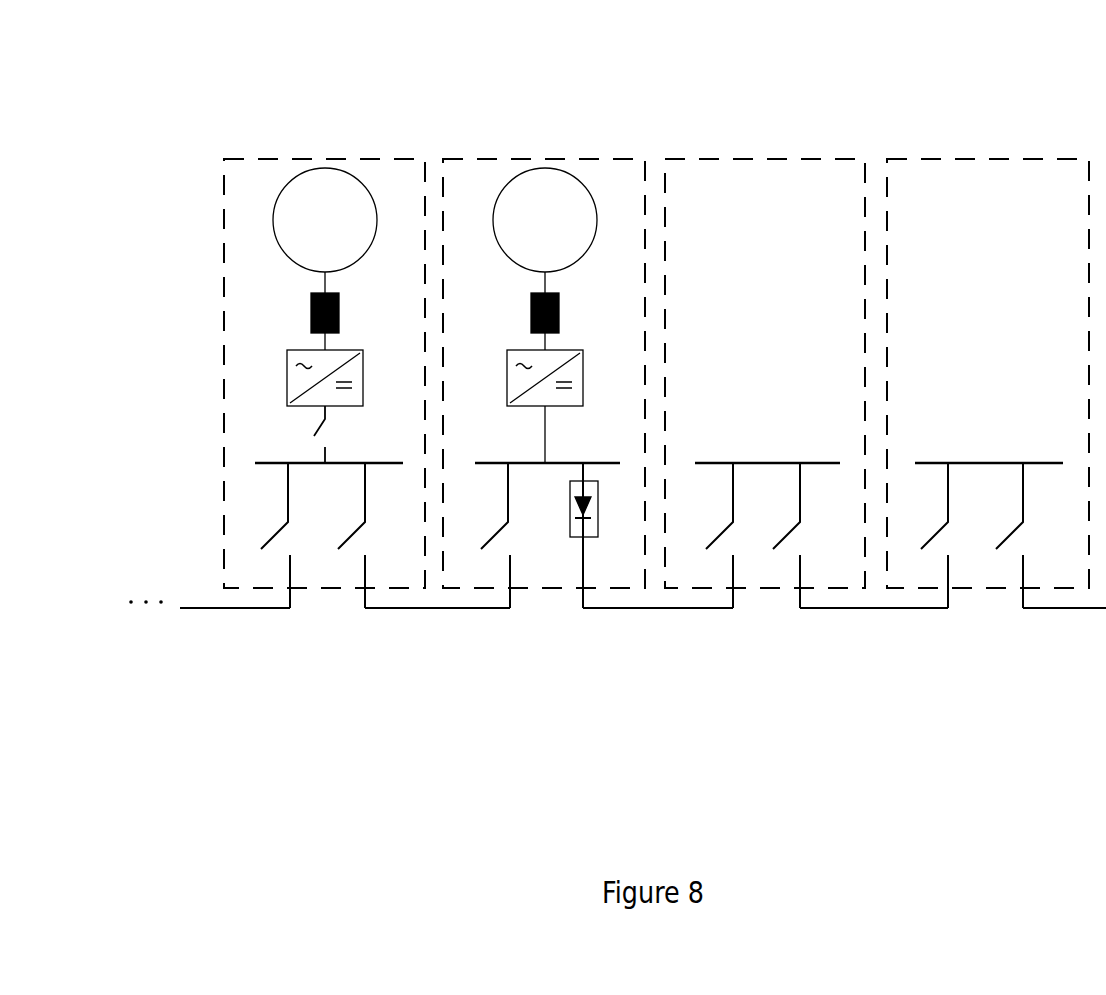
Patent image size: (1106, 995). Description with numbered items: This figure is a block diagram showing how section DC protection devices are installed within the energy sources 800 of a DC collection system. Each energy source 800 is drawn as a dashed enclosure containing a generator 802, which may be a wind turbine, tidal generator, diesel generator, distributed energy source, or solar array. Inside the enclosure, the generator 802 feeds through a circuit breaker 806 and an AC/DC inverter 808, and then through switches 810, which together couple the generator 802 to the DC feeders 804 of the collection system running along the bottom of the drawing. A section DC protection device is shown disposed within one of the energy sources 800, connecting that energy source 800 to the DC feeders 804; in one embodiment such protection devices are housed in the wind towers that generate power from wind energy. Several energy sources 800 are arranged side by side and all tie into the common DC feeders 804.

The energy sources 800 is at (942, 159).
The generators 802 is at (341, 262).
The DC feeders 804 is at (1077, 608).
The circuit breakers 806 is at (577, 305).
The AC/DC inverters 808 is at (602, 371).
The switches 810 is at (297, 430).